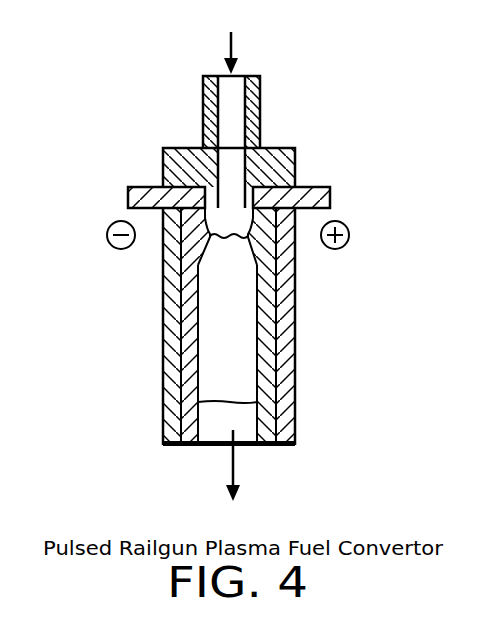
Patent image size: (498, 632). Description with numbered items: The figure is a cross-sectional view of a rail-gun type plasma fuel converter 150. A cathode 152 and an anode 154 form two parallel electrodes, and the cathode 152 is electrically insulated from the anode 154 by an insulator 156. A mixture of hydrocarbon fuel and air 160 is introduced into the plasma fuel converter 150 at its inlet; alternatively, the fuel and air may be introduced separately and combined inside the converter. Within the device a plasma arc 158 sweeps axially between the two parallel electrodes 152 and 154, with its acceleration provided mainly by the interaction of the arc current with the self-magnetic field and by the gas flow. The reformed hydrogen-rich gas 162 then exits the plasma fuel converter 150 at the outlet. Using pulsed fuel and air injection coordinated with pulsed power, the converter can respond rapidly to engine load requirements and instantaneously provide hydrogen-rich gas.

The plasma fuel converter 150 is at (395, 36).
The cathode 152 is at (142, 186).
The anode 154 is at (332, 186).
The insulator 156 is at (170, 147).
The plasma arc 158 is at (232, 400).
The mixture of hydrocarbon fuel and air 160 is at (231, 50).
The hydrogen-rich gas 162 is at (233, 468).